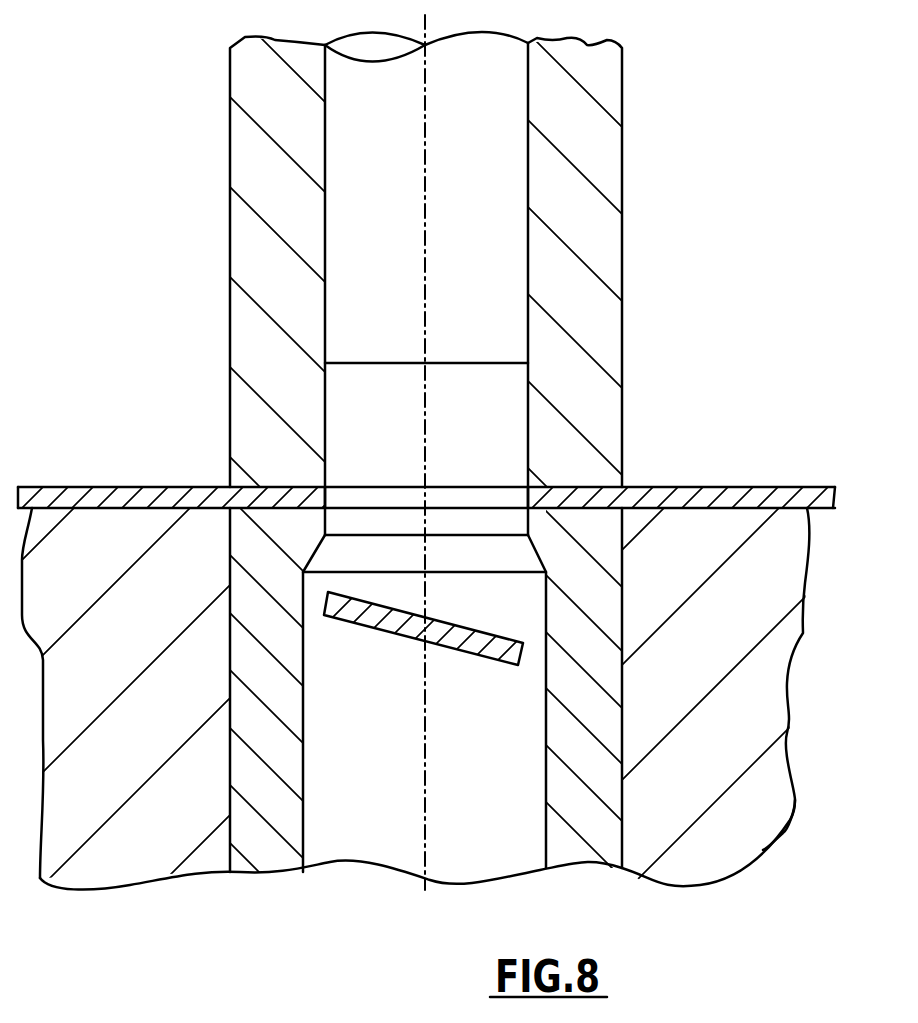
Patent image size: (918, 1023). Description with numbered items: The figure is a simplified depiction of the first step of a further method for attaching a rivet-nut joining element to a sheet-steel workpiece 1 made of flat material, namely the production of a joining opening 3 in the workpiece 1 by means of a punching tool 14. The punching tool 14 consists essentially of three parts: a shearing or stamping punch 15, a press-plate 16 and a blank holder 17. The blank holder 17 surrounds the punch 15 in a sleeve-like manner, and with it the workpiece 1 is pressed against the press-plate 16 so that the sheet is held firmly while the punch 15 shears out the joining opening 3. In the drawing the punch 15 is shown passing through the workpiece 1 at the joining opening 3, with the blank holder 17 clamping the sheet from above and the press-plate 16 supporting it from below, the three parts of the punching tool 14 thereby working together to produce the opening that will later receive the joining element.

The workpiece 1 is at (459, 500).
The joining opening 3 is at (426, 464).
The punching tool 14 is at (459, 500).
The shearing or stamping punch 15 is at (495, 243).
The press-plate 16 is at (287, 767).
The blank holder 17 is at (595, 405).